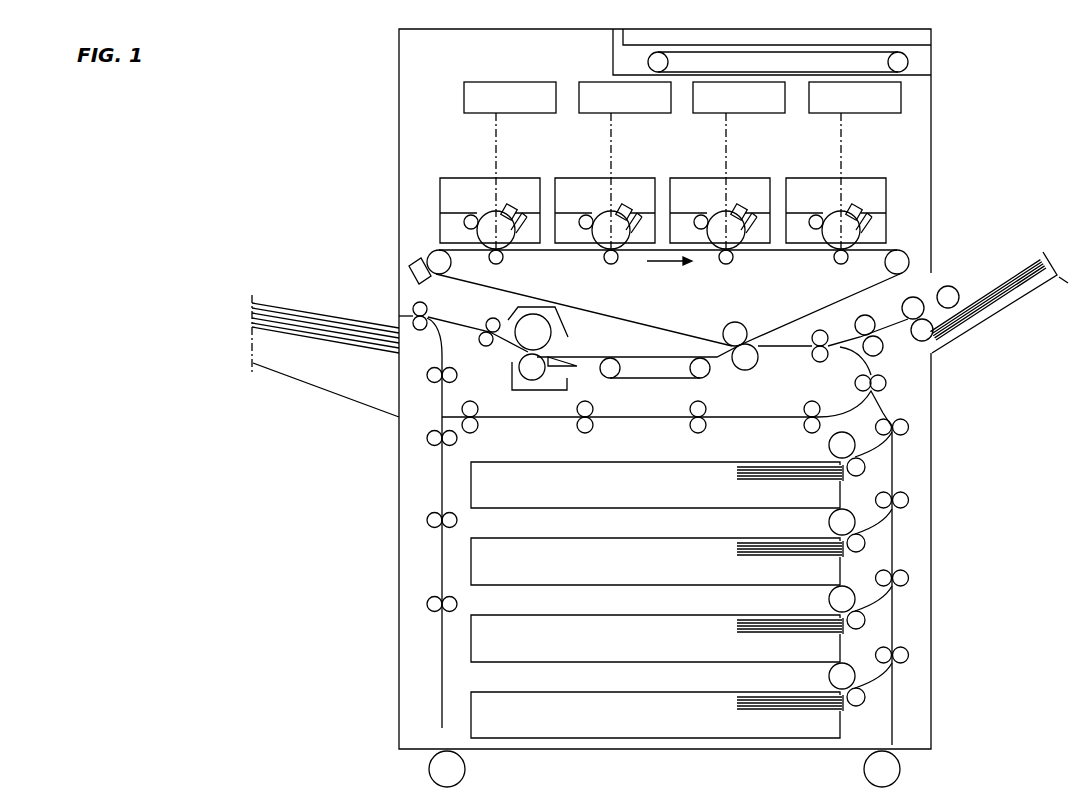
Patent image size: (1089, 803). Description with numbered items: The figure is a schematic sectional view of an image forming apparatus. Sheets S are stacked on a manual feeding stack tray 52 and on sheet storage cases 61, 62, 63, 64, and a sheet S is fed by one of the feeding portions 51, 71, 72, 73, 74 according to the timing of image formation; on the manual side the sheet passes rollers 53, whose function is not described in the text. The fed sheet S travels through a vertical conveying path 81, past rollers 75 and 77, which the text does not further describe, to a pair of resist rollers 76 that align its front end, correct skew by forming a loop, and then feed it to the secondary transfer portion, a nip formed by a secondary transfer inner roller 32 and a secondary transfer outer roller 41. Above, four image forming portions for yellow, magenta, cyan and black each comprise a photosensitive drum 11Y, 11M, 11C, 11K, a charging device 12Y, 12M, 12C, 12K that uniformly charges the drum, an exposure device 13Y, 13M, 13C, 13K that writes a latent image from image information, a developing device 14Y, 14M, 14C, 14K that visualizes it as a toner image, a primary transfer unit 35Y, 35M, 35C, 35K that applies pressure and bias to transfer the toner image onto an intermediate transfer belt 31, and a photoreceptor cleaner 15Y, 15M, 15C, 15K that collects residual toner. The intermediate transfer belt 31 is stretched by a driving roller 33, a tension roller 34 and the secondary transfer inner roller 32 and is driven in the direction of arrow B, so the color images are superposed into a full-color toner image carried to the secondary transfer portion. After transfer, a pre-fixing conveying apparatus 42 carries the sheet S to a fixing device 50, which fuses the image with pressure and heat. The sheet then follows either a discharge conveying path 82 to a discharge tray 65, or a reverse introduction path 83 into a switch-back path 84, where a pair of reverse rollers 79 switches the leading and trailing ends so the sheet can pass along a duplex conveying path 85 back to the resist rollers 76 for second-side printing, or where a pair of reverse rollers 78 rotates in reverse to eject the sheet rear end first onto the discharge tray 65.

The photosensitive drum 11Y is at (482, 213).
The photosensitive drum 11M is at (597, 213).
The photosensitive drum 11C is at (712, 213).
The photosensitive drum 11K is at (827, 213).
The charging device 12Y is at (513, 207).
The charging device 12M is at (628, 207).
The charging device 12C is at (743, 207).
The charging device 12K is at (858, 207).
The exposure device 13Y is at (510, 97).
The exposure device 13M is at (625, 97).
The exposure device 13C is at (739, 97).
The exposure device 13K is at (855, 97).
The developing device 14Y is at (455, 217).
The developing device 14M is at (570, 217).
The developing device 14C is at (685, 217).
The developing device 14K is at (800, 217).
The photoreceptor cleaner 15Y is at (532, 212).
The photoreceptor cleaner 15M is at (647, 212).
The photoreceptor cleaner 15C is at (762, 212).
The photoreceptor cleaner 15K is at (877, 212).
The intermediate transfer belt 31 is at (785, 328).
The secondary transfer inner roller 32 is at (729, 325).
The driving roller 33 is at (433, 255).
The tension roller 34 is at (900, 250).
The primary transfer unit 35Y is at (503, 263).
The primary transfer unit 35M is at (612, 265).
The primary transfer unit 35C is at (725, 265).
The primary transfer unit 35K is at (835, 258).
The secondary transfer outer roller 41 is at (748, 366).
The pre-fixing conveying apparatus 42 is at (662, 378).
The fixing device 50 is at (543, 328).
The feeding portion 51 is at (933, 280).
The manual feeding stack tray 52 is at (990, 312).
The manual feed conveying roller pair 53 is at (856, 318).
The sheet storage case 61 is at (470, 481).
The sheet storage case 62 is at (470, 558).
The sheet storage case 63 is at (470, 636).
The sheet storage case 64 is at (470, 713).
The discharge tray 65 is at (313, 373).
The feeding portion 71 is at (818, 445).
The feeding portion 72 is at (818, 522).
The feeding portion 73 is at (818, 599).
The feeding portion 74 is at (818, 676).
The conveying roller pair 75 is at (887, 383).
The pair of resist rollers 76 is at (814, 362).
The conveying roller pair 77 is at (905, 432).
The pair of reverse rollers 78 is at (432, 382).
The pair of reverse rollers 79 is at (432, 445).
The vertical conveying path 81 is at (905, 420).
The discharge conveying path 82 is at (432, 316).
The reverse introduction path 83 is at (444, 335).
The switch-back path 84 is at (440, 538).
The duplex conveying path 85 is at (677, 417).
The sheet S is at (1028, 262).
The direction of arrow B is at (669, 273).